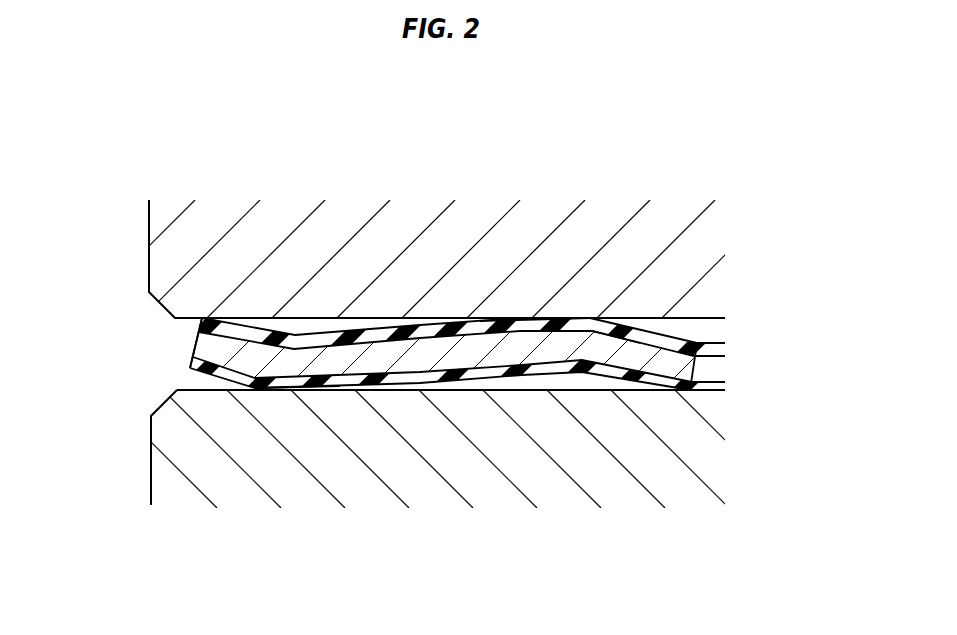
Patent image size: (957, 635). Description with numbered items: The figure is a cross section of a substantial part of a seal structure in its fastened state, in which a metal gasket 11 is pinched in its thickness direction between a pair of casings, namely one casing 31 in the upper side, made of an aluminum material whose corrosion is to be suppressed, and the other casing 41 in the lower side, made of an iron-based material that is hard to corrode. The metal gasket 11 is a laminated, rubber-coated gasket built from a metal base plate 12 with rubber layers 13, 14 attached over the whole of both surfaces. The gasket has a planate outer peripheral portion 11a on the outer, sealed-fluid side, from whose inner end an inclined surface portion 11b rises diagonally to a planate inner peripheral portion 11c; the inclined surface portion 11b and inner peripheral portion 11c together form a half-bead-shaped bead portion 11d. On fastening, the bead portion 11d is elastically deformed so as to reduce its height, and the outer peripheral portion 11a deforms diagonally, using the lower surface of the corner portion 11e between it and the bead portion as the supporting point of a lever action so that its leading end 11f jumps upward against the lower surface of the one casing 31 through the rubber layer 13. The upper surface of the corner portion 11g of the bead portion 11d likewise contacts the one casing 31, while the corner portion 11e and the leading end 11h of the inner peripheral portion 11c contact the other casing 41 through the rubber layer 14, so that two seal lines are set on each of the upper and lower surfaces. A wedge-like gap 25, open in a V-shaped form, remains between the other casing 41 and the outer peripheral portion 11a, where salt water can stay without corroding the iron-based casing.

The metal gasket 11 is at (349, 321).
The outer peripheral portion 11a is at (250, 355).
The inclined surface portion 11b is at (437, 356).
The inner peripheral portion 11c is at (630, 348).
The bead portion 11d is at (527, 308).
The corner portion 11e is at (306, 370).
The leading end 11f is at (208, 343).
The corner portion 11g is at (583, 346).
The leading end 11h is at (725, 383).
The metal base plate 12 is at (678, 363).
The rubber layer 13 is at (700, 343).
The rubber layer 14 is at (668, 391).
The wedge-like gap 25 is at (203, 384).
The casing 31 is at (167, 262).
The casing 41 is at (170, 472).